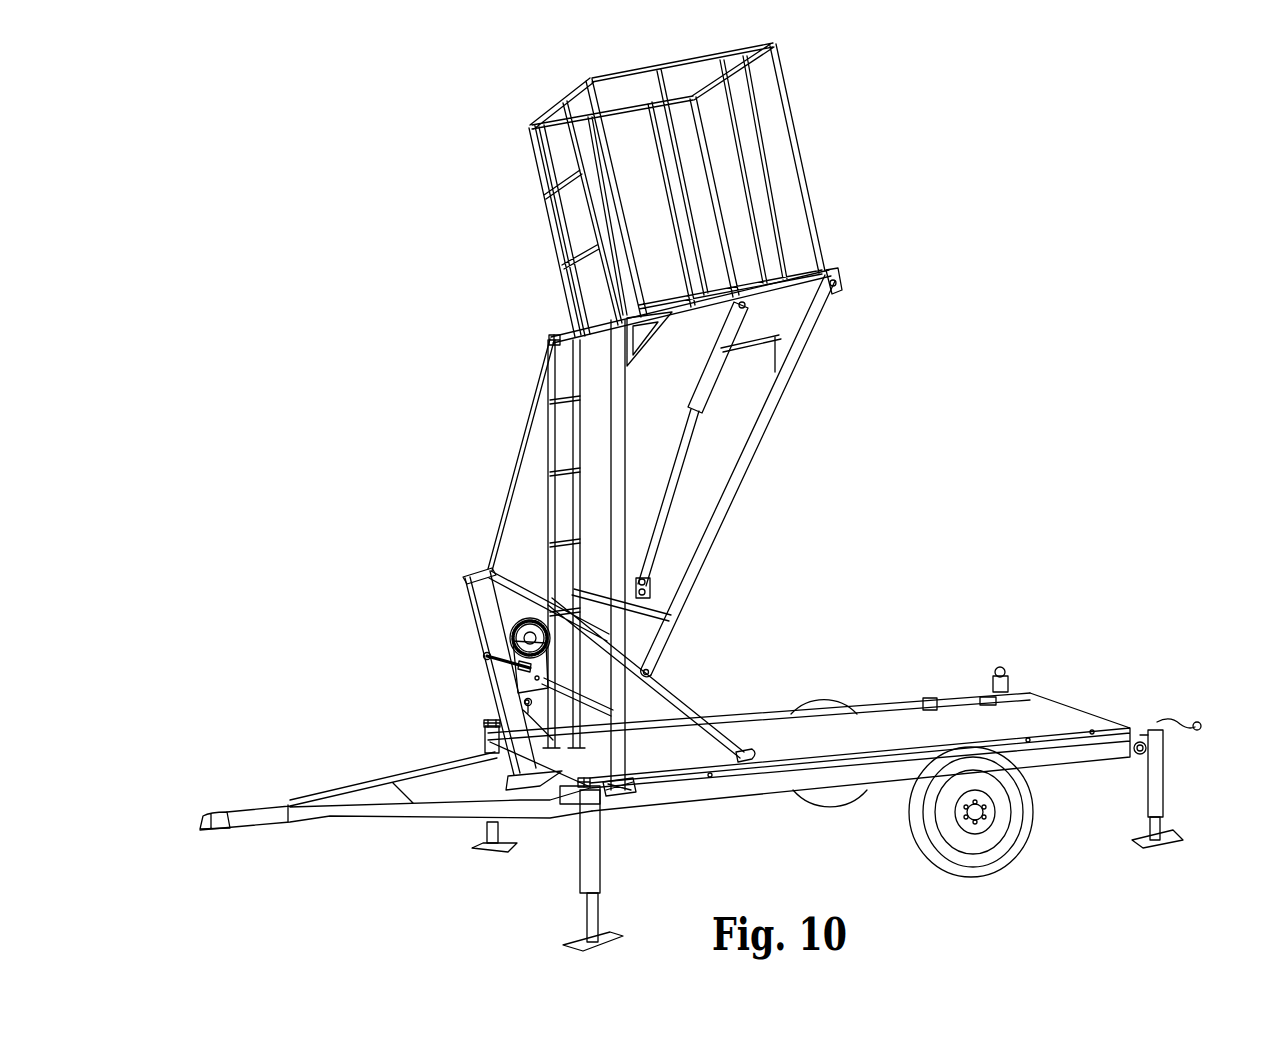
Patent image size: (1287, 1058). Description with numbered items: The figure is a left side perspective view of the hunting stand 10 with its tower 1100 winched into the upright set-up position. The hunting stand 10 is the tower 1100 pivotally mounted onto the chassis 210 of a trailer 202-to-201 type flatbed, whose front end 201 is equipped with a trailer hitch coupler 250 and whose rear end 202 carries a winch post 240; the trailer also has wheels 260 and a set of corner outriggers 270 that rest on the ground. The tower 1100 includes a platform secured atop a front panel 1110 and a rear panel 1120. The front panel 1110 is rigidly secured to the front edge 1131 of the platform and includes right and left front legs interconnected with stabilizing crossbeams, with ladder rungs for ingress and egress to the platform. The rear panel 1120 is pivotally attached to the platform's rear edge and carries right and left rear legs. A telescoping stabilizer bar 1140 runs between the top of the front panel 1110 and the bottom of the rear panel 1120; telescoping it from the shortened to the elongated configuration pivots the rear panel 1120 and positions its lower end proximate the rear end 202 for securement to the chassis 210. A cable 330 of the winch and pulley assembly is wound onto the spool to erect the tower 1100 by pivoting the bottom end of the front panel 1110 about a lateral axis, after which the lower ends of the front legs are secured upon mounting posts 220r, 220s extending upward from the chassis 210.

The hunting stand 10 is at (912, 156).
The tower 1100 is at (498, 357).
The front edge 1131 is at (552, 337).
The cable 330 is at (528, 463).
The rear panel 1120 is at (765, 423).
The telescoping stabilizer bar 1140 is at (640, 563).
The front panel 1110 is at (617, 760).
The winch post 240 is at (484, 632).
The mounting post 220s is at (527, 707).
The mounting post 220r is at (602, 795).
The front end 201 is at (373, 798).
The trailer hitch coupler 250 is at (208, 814).
The corner outriggers 270 is at (487, 832).
The chassis 210 is at (857, 740).
The rear end 202 is at (1058, 708).
The wheels 260 is at (1016, 855).